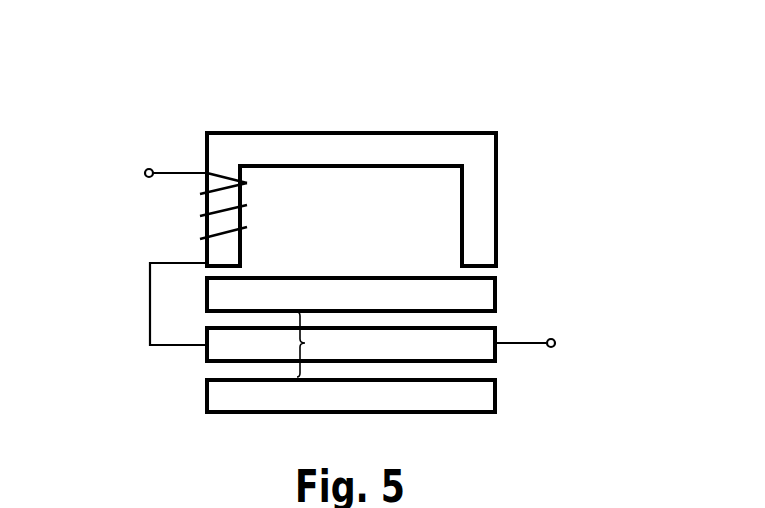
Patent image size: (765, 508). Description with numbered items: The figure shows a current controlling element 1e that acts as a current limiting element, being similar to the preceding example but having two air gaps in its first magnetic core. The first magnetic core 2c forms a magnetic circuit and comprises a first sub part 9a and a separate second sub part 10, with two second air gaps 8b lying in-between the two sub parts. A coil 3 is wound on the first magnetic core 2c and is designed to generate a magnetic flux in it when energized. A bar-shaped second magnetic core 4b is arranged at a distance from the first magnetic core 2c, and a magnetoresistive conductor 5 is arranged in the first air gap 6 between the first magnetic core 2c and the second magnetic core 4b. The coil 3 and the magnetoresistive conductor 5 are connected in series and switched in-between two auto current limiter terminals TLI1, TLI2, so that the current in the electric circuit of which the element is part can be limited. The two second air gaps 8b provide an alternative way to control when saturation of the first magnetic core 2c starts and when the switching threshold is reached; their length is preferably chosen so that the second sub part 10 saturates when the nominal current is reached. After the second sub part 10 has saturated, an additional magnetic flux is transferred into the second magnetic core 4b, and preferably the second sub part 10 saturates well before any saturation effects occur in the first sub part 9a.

The current controlling element 1e is at (138, 49).
The coil 3 is at (230, 178).
The auto current limiter terminal TLI1 is at (142, 174).
The auto current limiter terminal TLI2 is at (563, 346).
The first magnetic core 2c is at (591, 133).
The first sub part 9a is at (483, 220).
The second air gaps 8b is at (488, 273).
The second sub part 10 is at (485, 298).
The first air gap 6 is at (314, 344).
The magnetoresistive conductor 5 is at (487, 350).
The second magnetic core 4b is at (485, 397).